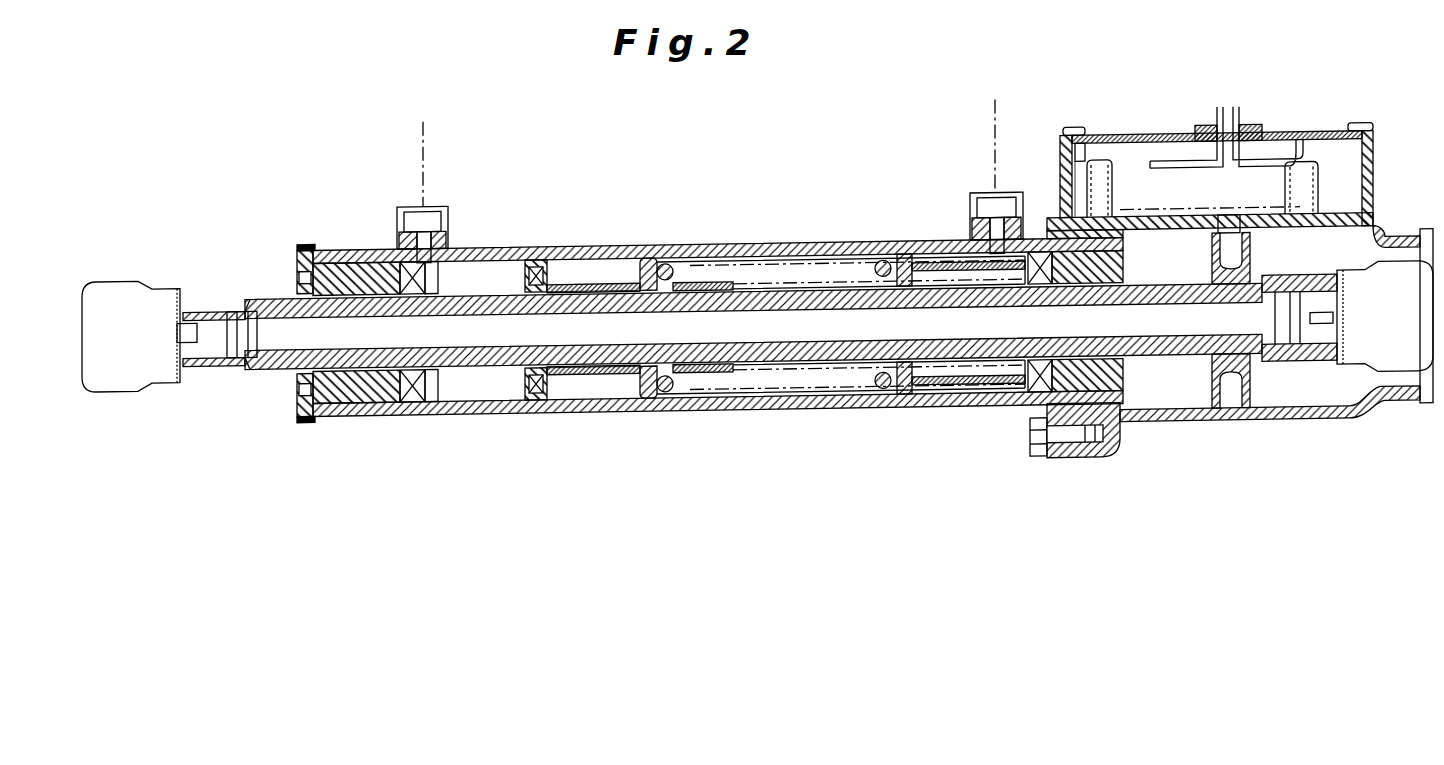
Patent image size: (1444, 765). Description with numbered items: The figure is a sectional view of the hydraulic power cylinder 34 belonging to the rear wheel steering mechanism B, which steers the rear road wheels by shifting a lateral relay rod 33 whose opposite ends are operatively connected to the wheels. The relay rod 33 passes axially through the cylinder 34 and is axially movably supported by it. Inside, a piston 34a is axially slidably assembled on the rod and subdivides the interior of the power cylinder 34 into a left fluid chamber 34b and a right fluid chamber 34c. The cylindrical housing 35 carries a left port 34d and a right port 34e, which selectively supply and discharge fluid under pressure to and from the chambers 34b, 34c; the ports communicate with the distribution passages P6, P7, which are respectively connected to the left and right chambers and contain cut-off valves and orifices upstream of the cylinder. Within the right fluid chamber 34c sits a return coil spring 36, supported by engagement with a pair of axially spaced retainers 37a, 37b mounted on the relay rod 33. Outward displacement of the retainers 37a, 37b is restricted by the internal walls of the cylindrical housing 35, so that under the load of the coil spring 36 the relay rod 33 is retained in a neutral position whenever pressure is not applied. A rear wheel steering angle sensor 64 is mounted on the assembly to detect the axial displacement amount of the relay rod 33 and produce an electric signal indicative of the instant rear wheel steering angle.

The relay rod 33 is at (793, 364).
The hydraulic power cylinder 34 is at (577, 251).
The piston 34a is at (523, 382).
The left fluid chamber 34b is at (472, 379).
The right fluid chamber 34c is at (607, 381).
The left port 34d is at (440, 202).
The right port 34e is at (978, 197).
The cylindrical housing 35 is at (764, 242).
The return coil spring 36 is at (727, 393).
The retainer 37a is at (663, 392).
The retainer 37b is at (917, 391).
The rear wheel steering angle sensor 64 is at (1143, 187).
The distribution passage P6 is at (425, 160).
The distribution passage P7 is at (993, 140).
The rear wheel steering mechanism B is at (879, 434).